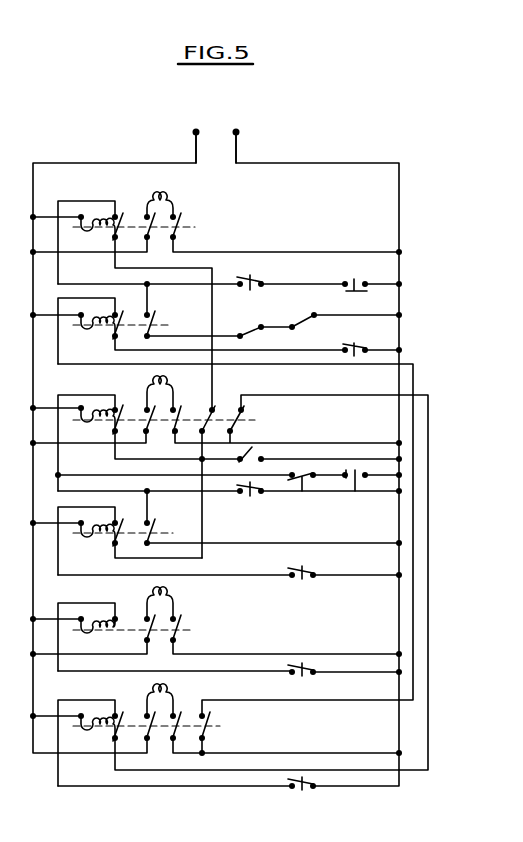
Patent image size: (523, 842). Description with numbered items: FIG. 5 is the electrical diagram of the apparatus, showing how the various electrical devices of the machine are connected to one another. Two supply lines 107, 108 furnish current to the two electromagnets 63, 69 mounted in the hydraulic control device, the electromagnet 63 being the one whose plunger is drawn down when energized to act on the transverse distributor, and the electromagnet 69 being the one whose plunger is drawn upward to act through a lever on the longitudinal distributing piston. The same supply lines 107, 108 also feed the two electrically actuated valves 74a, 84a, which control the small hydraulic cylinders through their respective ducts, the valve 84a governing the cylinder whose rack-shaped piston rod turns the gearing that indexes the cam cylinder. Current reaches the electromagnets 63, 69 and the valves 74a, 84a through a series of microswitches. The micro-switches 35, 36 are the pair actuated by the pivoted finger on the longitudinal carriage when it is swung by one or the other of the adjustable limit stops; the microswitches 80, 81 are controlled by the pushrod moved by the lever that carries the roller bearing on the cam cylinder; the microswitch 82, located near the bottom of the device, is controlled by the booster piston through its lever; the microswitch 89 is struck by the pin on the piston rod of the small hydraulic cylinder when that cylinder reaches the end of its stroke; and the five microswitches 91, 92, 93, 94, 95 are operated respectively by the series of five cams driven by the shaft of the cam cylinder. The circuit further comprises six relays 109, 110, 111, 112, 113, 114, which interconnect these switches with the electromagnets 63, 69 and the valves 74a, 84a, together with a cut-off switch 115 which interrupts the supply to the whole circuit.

The supply line 107 is at (197, 136).
The supply line 108 is at (237, 136).
The electromagnet 63 is at (162, 209).
The relay 109 is at (97, 235).
The microswitch 91 is at (250, 276).
The cut-off switch 115 is at (355, 276).
The relay 110 is at (97, 334).
The micro-switch 36 is at (245, 330).
The microswitch 80 is at (298, 321).
The microswitch 92 is at (355, 343).
The electrically actuated valve 84a is at (173, 386).
The relay 111 is at (93, 424).
The microswitch 89 is at (254, 443).
The micro-switch 35 is at (250, 499).
The microswitch 82 is at (302, 494).
The microswitch 93 is at (355, 493).
The relay 112 is at (94, 541).
The microswitch 95 is at (302, 584).
The electrically actuated valve 74a is at (173, 597).
The relay 113 is at (94, 634).
The microswitch 94 is at (302, 681).
The electromagnet 69 is at (178, 689).
The relay 114 is at (94, 733).
The microswitch 81 is at (302, 795).